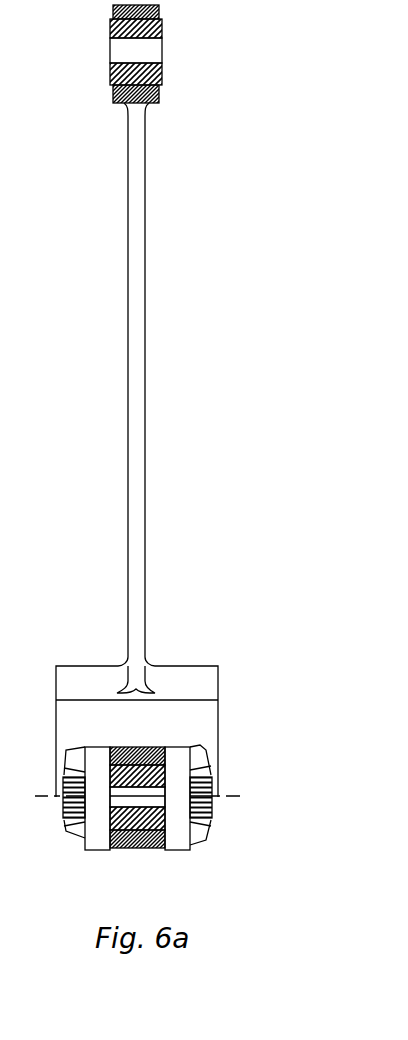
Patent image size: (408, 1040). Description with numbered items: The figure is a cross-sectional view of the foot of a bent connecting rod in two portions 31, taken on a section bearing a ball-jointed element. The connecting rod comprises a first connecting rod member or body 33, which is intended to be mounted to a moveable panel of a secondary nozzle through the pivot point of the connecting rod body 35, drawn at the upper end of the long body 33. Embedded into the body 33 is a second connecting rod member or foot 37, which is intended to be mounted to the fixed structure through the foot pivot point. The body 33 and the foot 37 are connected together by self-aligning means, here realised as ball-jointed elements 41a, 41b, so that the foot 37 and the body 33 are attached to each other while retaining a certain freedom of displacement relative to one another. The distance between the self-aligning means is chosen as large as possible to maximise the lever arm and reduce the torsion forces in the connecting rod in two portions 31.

The bent connecting rod in two portions 31 is at (100, 199).
The first connecting rod member or body 33 is at (145, 255).
The pivot point of the connecting rod body 35 is at (163, 52).
The second connecting rod member or foot 37 is at (140, 848).
The ball-jointed element 41a is at (140, 747).
The ball-jointed element 41b is at (137, 827).